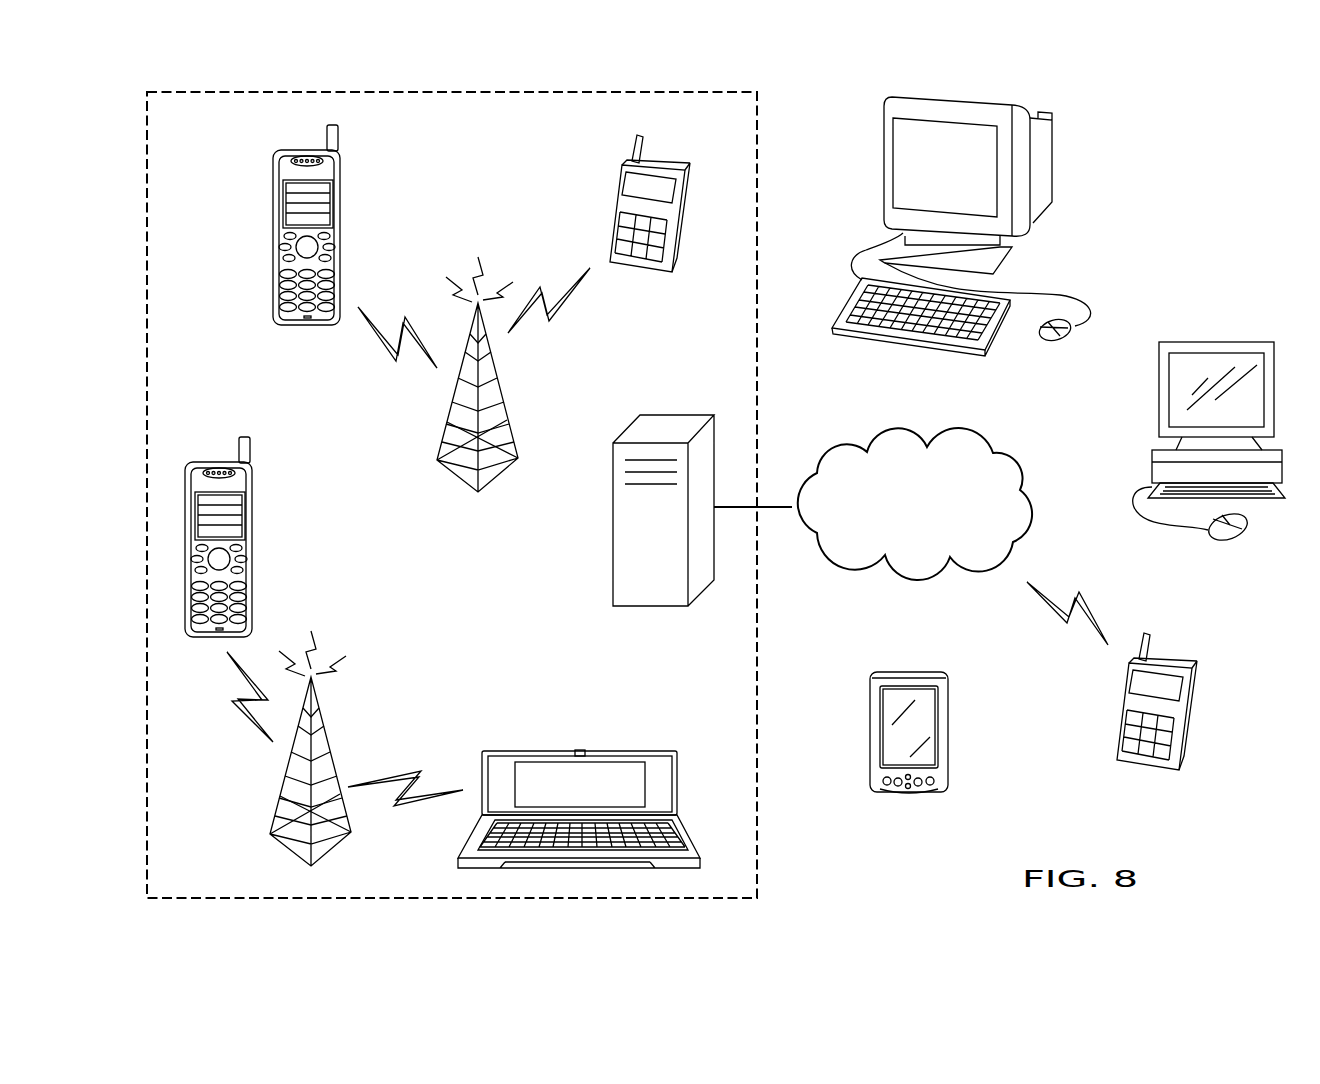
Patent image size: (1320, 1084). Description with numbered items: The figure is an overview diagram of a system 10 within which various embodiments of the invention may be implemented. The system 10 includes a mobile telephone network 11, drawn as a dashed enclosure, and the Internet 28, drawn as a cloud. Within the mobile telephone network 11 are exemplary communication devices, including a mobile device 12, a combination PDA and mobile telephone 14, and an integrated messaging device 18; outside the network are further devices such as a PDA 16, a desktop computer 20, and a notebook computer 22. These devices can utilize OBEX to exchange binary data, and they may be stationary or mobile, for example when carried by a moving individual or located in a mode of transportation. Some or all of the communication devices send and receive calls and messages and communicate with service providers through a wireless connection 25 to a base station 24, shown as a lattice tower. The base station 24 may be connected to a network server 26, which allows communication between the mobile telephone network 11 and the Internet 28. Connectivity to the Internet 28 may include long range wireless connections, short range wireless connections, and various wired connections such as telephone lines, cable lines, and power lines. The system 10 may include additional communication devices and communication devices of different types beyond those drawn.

The system 10 is at (1265, 617).
The mobile telephone network 11 is at (194, 137).
The mobile device 12 is at (345, 236).
The combination PDA and mobile telephone 14 is at (580, 752).
The PDA 16 is at (950, 732).
The integrated messaging device 18 is at (615, 210).
The desktop computer 20 is at (1053, 157).
The notebook computer 22 is at (1218, 341).
The base station 24 is at (498, 380).
The wireless connection 25 is at (253, 723).
The network server 26 is at (612, 525).
The Internet 28 is at (962, 430).